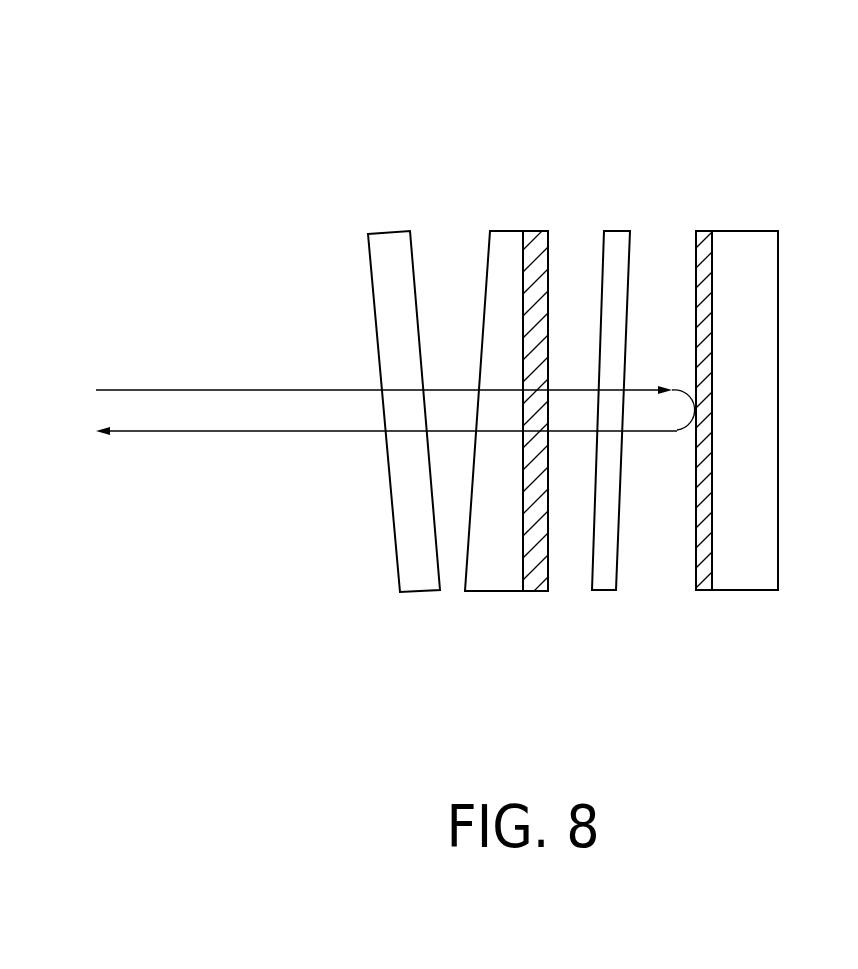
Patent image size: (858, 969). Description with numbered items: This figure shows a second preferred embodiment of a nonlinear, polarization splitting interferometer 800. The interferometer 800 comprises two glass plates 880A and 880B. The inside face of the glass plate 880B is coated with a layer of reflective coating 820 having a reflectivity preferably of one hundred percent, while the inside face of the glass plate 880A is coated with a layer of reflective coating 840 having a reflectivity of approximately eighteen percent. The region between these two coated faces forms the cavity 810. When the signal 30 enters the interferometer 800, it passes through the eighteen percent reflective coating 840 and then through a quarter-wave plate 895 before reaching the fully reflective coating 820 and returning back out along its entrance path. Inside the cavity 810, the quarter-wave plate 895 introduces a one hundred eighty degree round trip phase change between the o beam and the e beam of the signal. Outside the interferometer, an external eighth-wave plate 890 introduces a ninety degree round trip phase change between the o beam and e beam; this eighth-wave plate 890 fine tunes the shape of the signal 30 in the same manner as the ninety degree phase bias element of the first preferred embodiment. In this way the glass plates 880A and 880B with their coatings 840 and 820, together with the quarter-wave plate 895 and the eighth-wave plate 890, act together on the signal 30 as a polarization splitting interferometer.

The interferometer 800 is at (632, 47).
The signal 30 is at (195, 390).
The λ/8 plate 890 is at (422, 604).
The glass plate 880A is at (500, 230).
The reflective coating 840 is at (536, 218).
The λ/4 plate 895 is at (603, 603).
The reflective coating 820 is at (705, 218).
The glass plate 880B is at (752, 230).
The cavity 810 is at (664, 505).